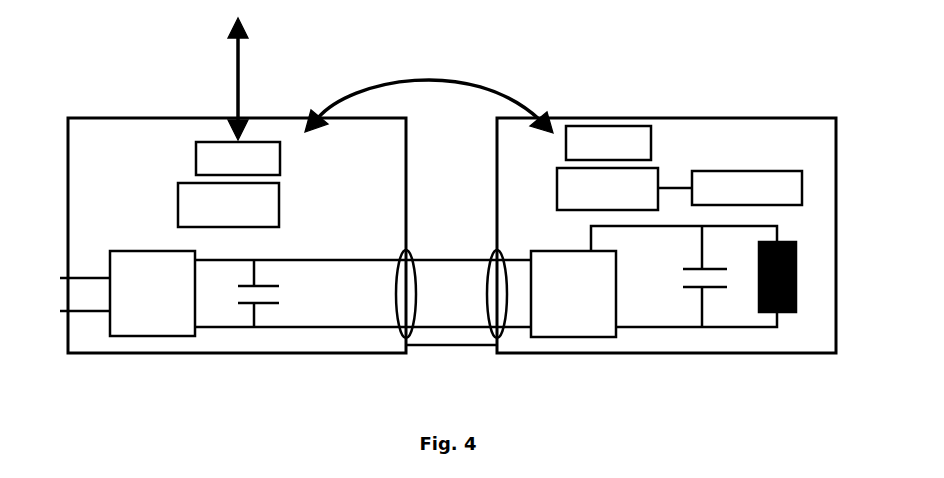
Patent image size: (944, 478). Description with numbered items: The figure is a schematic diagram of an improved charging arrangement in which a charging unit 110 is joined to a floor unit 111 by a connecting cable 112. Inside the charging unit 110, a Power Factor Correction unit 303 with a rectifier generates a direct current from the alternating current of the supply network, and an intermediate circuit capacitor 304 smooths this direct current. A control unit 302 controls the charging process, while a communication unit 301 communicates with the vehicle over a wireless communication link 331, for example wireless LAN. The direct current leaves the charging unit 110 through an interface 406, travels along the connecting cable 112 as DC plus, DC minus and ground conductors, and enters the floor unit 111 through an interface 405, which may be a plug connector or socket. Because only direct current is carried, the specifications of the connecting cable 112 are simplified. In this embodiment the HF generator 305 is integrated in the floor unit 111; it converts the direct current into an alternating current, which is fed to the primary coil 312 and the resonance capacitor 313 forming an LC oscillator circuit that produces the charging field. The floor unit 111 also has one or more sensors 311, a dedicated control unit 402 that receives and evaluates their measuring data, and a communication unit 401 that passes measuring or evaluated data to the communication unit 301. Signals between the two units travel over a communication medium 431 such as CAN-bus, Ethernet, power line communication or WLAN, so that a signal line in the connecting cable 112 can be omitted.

The charging unit 110 is at (110, 117).
The floor unit 111 is at (683, 118).
The connecting cable 112 is at (450, 226).
The communication unit 301 is at (280, 150).
The control unit 302 is at (279, 205).
The Power Factor Correction (PFC) unit 303 is at (147, 251).
The intermediate circuit capacitor 304 is at (262, 305).
The HF generator 305 is at (577, 337).
The sensors 311 is at (752, 171).
The primary coil 312 is at (759, 262).
The resonance capacitor 313 is at (690, 280).
The wireless communication link 331 is at (236, 92).
The communication unit 401 is at (595, 126).
The control unit 402 is at (557, 183).
The interface 405 is at (500, 250).
The interface 406 is at (400, 250).
The communication medium 431 is at (440, 92).